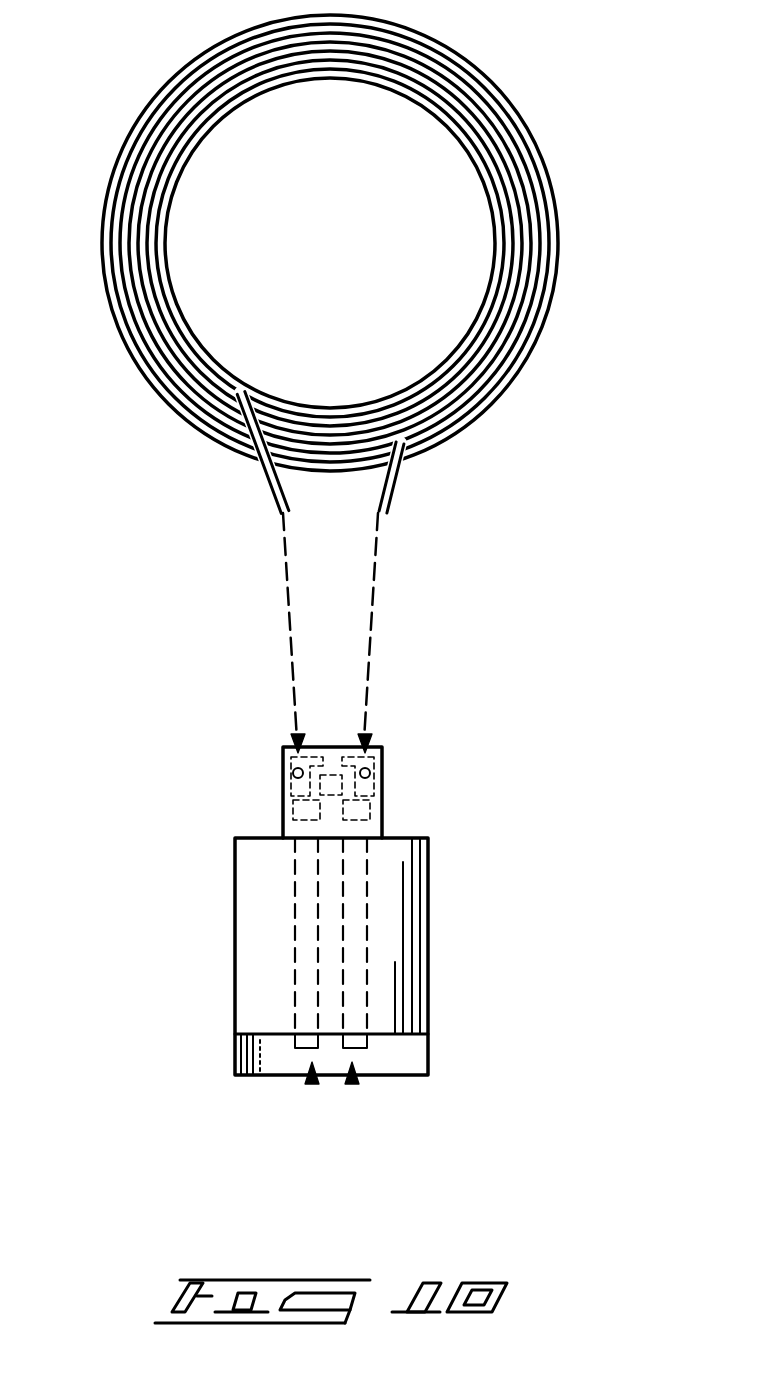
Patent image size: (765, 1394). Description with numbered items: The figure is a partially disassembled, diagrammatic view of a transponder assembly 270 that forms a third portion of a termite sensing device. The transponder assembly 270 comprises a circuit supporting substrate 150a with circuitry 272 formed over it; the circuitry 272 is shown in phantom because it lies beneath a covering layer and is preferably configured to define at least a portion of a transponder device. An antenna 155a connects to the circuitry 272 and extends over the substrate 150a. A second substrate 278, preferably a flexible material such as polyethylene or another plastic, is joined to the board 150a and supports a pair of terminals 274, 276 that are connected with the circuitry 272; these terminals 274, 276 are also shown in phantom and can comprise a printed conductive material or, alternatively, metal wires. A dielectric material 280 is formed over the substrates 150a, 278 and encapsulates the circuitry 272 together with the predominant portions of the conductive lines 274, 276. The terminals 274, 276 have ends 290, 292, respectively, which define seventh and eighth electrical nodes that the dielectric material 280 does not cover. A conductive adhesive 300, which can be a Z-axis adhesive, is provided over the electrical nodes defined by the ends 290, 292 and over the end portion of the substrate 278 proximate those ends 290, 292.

The antenna 155a is at (122, 358).
The transponder assembly 270 is at (550, 565).
The circuit supporting substrate 150a is at (283, 818).
The circuitry 272 is at (283, 765).
The substrate 278 is at (268, 935).
The dielectric material 280 is at (415, 1003).
The conductive adhesive 300 is at (237, 1058).
The terminal 274 is at (305, 1043).
The terminal 276 is at (368, 1048).
The end 290 is at (312, 1082).
The end 292 is at (352, 1082).